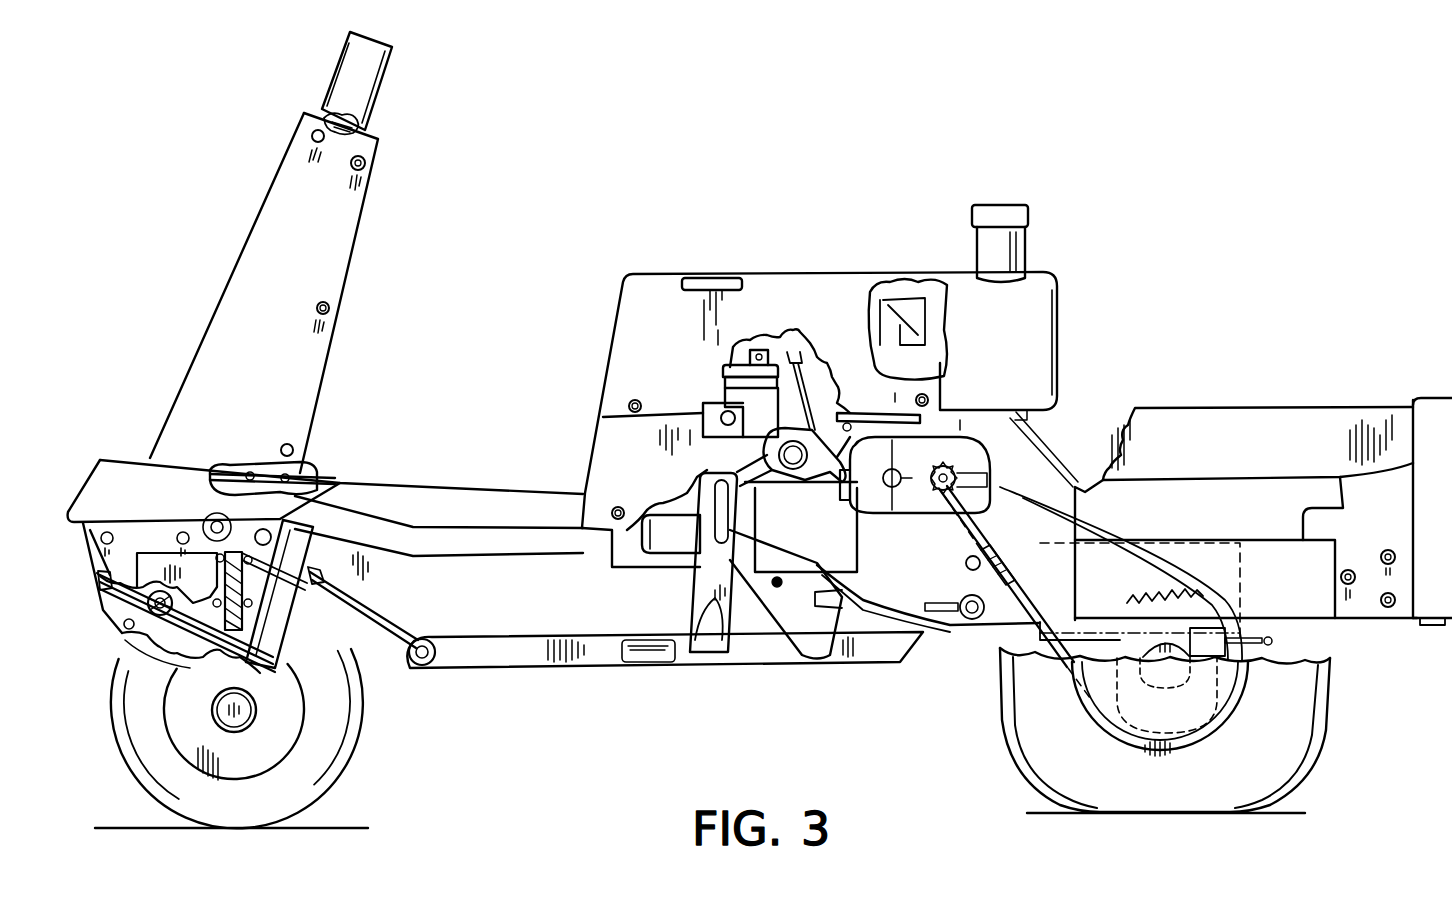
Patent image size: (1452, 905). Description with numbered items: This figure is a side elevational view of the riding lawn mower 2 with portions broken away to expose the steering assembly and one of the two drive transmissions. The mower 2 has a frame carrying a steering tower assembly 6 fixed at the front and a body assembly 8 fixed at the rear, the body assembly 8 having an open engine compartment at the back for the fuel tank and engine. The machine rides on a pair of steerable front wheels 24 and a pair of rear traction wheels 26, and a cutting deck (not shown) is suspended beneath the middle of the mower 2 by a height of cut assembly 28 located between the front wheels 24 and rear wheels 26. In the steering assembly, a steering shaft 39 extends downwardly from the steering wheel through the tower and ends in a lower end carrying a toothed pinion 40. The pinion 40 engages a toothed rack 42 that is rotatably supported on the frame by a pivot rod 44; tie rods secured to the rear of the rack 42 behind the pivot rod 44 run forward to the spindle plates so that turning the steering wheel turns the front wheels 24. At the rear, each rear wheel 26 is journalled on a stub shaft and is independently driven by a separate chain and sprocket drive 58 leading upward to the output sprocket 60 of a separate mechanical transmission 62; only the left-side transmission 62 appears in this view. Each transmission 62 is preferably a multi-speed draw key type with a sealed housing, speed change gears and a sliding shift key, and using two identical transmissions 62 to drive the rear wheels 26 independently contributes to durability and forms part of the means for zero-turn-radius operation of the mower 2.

The riding lawn mower 2 is at (778, 194).
The steering tower assembly 6 is at (369, 211).
The body assembly 8 is at (810, 309).
The front wheels 24 is at (360, 736).
The rear traction wheels 26 is at (1317, 737).
The height of cut assembly 28 is at (745, 676).
The steering shaft 39 is at (165, 642).
The toothed pinion 40 is at (124, 626).
The toothed rack 42 is at (175, 650).
The pivot rod 44 is at (303, 513).
The chain and sprocket drive 58 is at (1005, 587).
The output sprocket 60 is at (1000, 497).
The mechanical transmission 62 is at (925, 445).